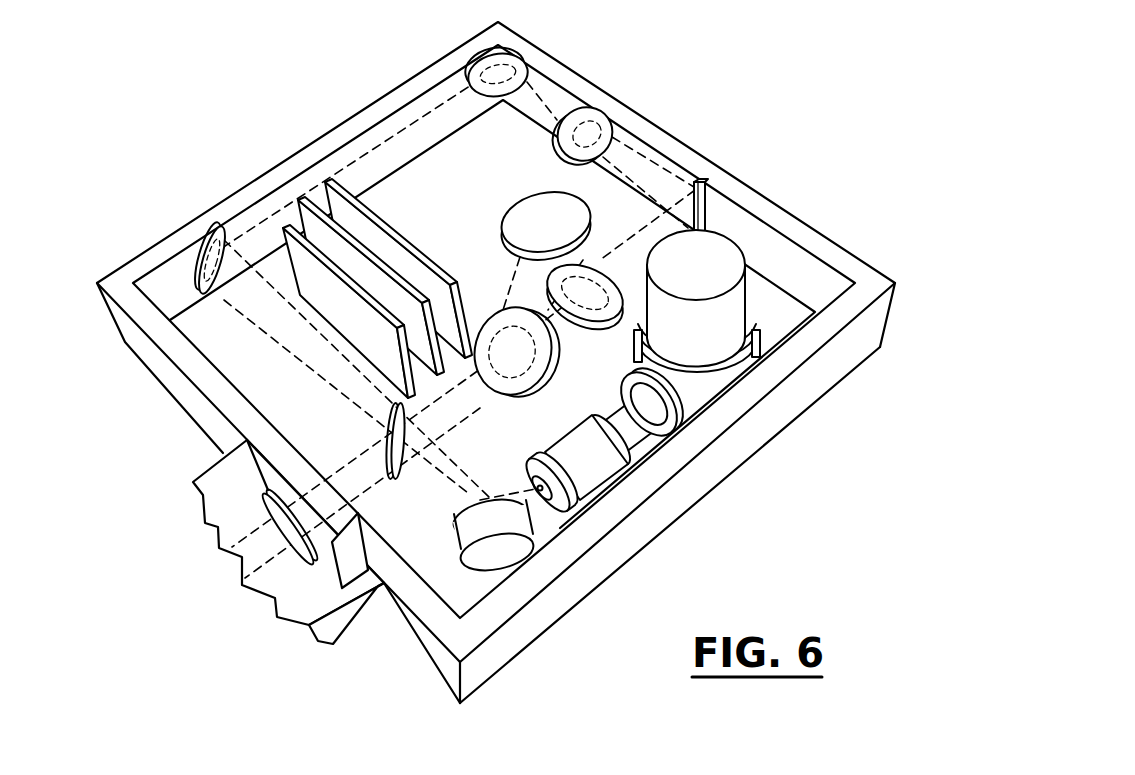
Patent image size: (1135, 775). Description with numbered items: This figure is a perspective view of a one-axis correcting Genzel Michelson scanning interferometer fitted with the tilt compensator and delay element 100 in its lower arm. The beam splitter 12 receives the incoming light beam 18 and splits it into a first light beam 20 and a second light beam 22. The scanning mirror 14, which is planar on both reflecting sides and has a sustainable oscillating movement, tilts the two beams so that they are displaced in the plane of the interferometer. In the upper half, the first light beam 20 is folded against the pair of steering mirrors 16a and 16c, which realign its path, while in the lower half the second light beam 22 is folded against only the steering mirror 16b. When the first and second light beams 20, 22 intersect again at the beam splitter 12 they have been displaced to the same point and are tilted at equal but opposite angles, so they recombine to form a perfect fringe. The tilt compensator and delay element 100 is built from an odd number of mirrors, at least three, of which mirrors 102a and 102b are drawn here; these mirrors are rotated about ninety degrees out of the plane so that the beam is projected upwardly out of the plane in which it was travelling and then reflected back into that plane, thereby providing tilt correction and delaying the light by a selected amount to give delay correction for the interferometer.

The beam splitter 12 is at (399, 481).
The scanning mirror 14 is at (612, 107).
The steering mirror 16a is at (196, 236).
The steering mirror 16b is at (703, 197).
The steering mirror 16c is at (522, 63).
The light beam 18 is at (462, 477).
The first light beam 20 is at (305, 355).
The second light beam 22 is at (475, 400).
The tilt compensator and delay element 100 is at (501, 282).
The mirror 102a is at (534, 377).
The mirror 102b is at (518, 207).